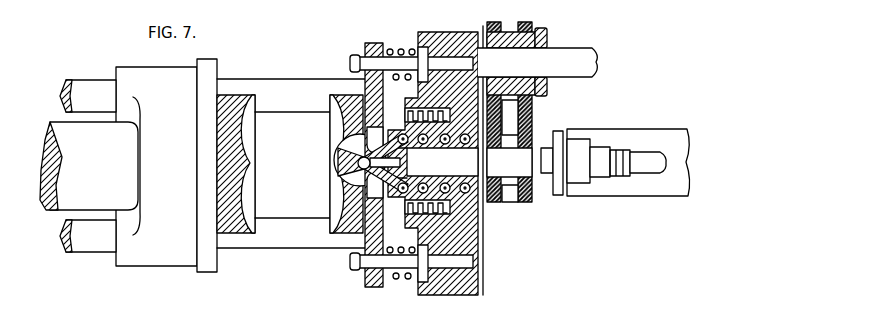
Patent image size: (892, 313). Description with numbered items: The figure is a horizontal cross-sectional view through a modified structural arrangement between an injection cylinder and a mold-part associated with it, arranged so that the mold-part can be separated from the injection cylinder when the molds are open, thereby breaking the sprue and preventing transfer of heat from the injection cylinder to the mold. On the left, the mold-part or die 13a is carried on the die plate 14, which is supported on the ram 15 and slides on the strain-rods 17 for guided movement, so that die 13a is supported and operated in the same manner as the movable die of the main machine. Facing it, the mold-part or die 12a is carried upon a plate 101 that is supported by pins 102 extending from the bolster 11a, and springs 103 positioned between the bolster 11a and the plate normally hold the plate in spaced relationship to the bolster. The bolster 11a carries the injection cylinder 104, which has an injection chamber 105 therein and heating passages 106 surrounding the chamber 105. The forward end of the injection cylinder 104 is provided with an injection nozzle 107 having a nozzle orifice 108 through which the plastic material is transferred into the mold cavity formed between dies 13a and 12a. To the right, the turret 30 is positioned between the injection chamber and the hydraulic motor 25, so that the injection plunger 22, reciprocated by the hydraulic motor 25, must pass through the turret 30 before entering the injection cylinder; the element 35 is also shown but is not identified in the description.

The bolster 11a is at (451, 36).
The mold-part or die 12a is at (349, 234).
The mold-part or die 13a is at (244, 234).
The die plate 14 is at (170, 178).
The ram 15 is at (90, 170).
The strain-rods 17 is at (94, 106).
The injection plunger 22 is at (547, 178).
The hydraulic motor 25 is at (661, 190).
The turret 30 is at (533, 113).
The adjusting screw 35 is at (542, 134).
The plate 101 is at (376, 284).
The pins 102 is at (362, 56).
The springs 103 is at (400, 48).
The injection cylinder 104 is at (480, 224).
The injection chamber 105 is at (442, 162).
The heating passages 106 is at (472, 204).
The injection nozzle 107 is at (358, 152).
The nozzle orifice 108 is at (345, 183).